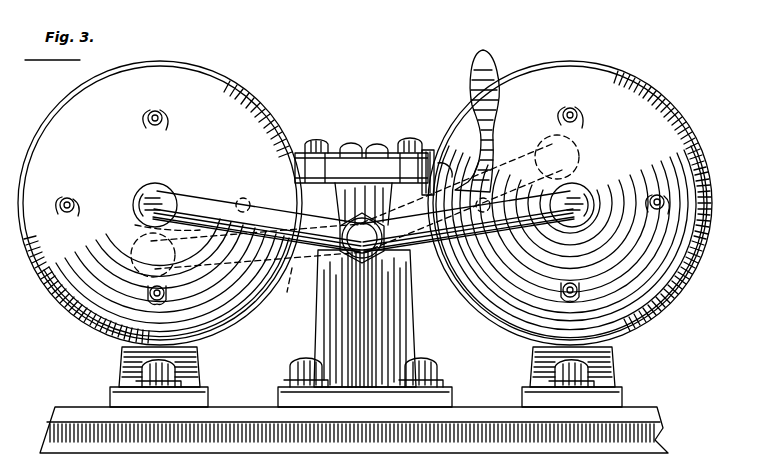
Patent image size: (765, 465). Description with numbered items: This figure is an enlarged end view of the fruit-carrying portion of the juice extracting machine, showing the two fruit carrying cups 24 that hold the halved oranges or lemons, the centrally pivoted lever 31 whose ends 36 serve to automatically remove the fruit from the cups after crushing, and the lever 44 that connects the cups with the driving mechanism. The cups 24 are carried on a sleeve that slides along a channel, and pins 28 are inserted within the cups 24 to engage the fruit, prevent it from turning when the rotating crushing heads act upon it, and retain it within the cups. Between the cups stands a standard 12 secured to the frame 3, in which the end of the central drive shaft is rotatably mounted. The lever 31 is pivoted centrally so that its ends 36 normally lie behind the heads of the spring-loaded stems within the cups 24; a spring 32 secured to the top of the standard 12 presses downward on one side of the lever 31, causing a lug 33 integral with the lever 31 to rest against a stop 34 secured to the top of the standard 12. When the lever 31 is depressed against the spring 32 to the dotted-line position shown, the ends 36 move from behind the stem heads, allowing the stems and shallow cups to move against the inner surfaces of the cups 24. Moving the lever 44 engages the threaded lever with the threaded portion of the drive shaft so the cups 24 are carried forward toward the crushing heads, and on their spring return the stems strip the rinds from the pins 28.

The frame 3 is at (236, 406).
The standard 12 is at (396, 326).
The fruit carrying cups 24 is at (653, 333).
The pins 28 is at (163, 118).
The centrally pivoted lever 31 is at (483, 240).
The spring 32 is at (440, 158).
The lug 33 is at (352, 153).
The stop 34 is at (375, 155).
The ends of lever 36 is at (152, 192).
The lever 44 is at (498, 92).